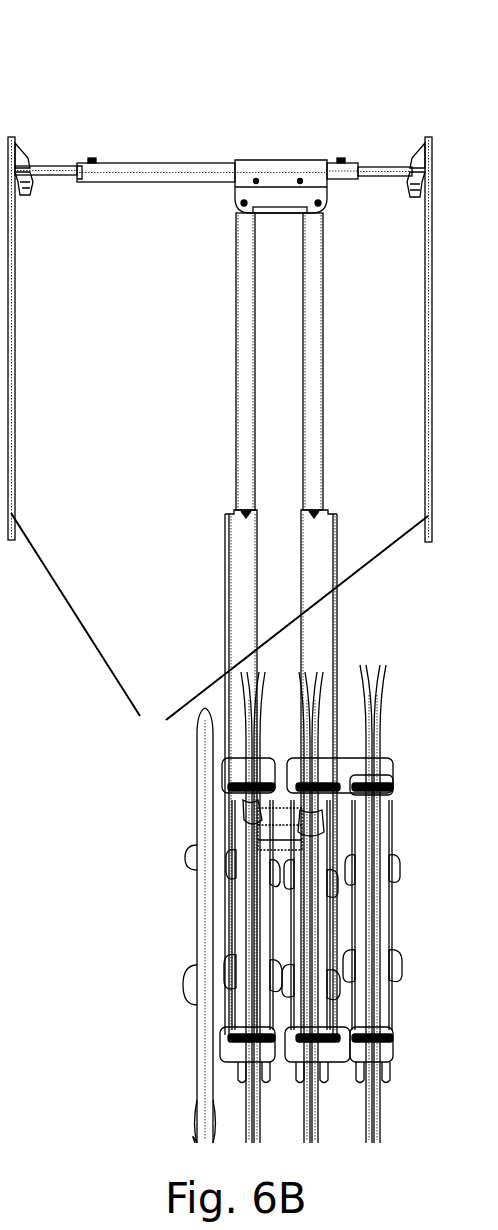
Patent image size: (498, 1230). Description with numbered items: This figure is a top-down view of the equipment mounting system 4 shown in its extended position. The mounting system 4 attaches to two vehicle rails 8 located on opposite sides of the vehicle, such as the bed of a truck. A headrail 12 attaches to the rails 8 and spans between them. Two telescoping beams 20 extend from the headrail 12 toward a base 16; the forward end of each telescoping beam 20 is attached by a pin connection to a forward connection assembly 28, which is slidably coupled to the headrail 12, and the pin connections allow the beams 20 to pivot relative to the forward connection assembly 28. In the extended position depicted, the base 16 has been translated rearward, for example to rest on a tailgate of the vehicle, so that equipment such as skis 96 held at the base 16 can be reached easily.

The mounting system 4 is at (213, 47).
The vehicle rails 8 is at (220, 437).
The headrail 12 is at (203, 167).
The forward connection assembly 28 is at (293, 187).
The telescoping beams 20 is at (191, 513).
The base 16 is at (280, 835).
The skis 96 is at (375, 740).